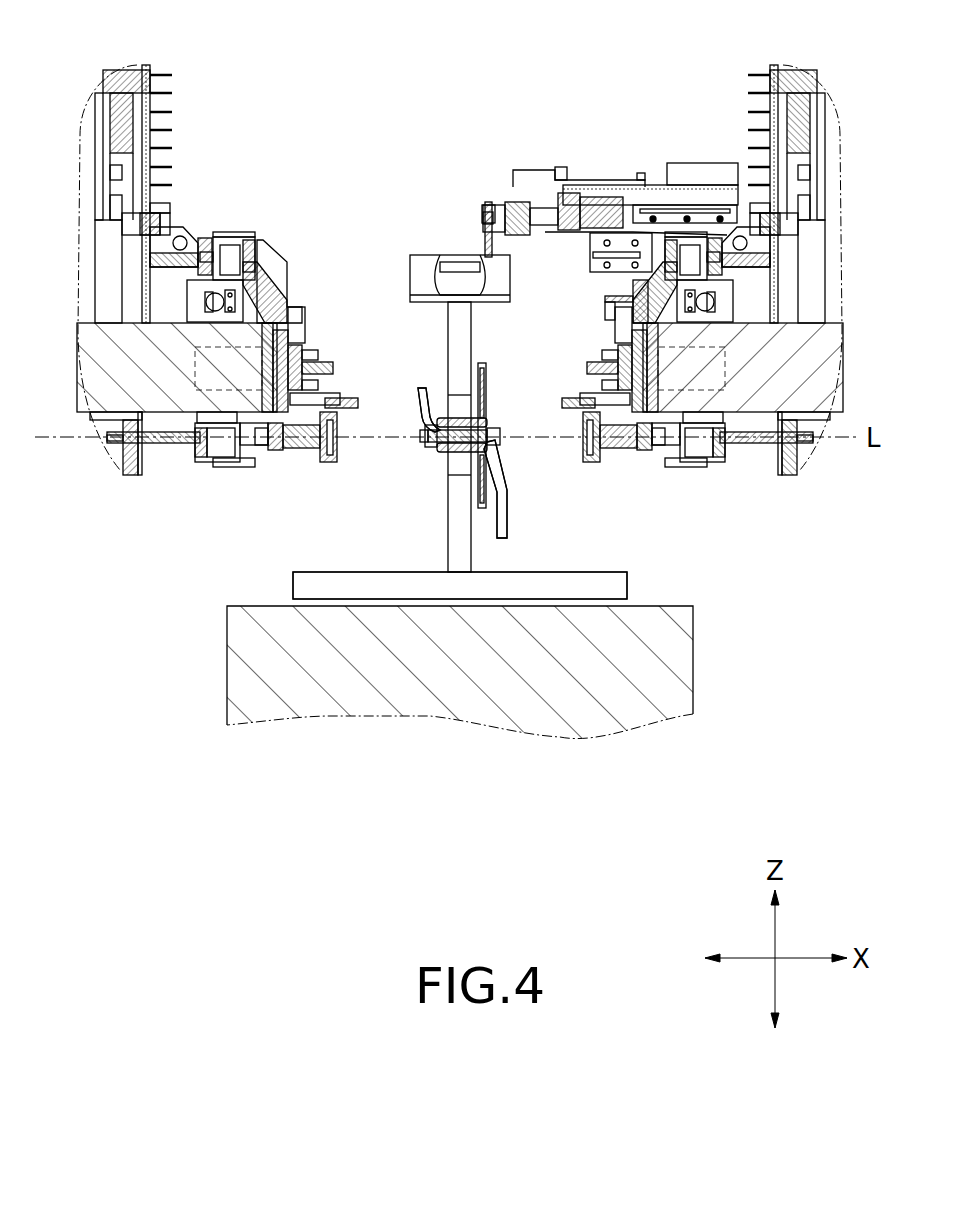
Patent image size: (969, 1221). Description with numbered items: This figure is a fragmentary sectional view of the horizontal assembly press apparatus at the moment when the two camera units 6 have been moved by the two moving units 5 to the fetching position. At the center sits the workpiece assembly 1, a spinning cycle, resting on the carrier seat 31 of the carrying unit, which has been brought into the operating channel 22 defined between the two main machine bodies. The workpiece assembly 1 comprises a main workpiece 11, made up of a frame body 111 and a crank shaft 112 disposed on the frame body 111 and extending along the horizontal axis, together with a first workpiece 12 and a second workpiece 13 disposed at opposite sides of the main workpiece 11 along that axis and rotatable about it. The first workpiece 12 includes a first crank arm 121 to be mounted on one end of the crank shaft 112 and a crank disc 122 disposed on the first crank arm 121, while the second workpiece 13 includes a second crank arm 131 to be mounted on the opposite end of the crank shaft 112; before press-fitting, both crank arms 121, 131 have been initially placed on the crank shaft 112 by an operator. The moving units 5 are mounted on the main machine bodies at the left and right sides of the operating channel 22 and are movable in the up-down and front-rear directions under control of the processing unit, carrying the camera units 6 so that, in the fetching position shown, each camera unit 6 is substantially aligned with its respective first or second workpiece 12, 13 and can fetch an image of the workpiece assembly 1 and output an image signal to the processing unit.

The operating channel 22 is at (391, 110).
The workpiece assembly 1 is at (427, 245).
The moving unit 5 is at (272, 258).
The camera unit 6 is at (330, 462).
The second workpiece 13 is at (412, 382).
The second crank arm 131 is at (429, 410).
The crank disc 122 is at (485, 362).
The crank shaft 112 is at (458, 444).
The first workpiece 12 is at (502, 522).
The first crank arm 121 is at (495, 489).
The main workpiece 11 is at (620, 590).
The frame body 111 is at (460, 585).
The carrier seat 31 is at (665, 677).